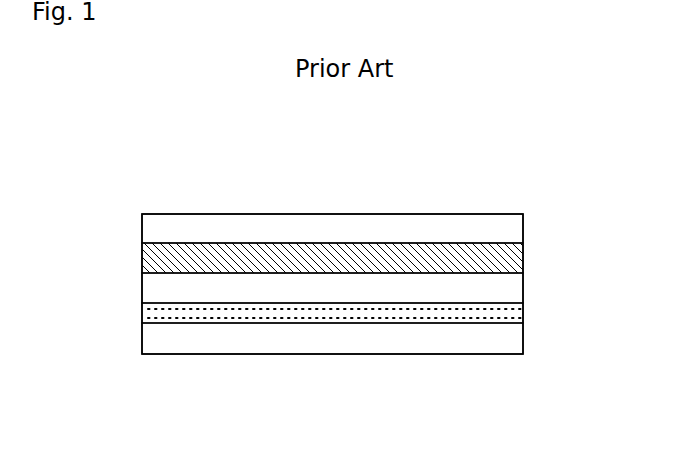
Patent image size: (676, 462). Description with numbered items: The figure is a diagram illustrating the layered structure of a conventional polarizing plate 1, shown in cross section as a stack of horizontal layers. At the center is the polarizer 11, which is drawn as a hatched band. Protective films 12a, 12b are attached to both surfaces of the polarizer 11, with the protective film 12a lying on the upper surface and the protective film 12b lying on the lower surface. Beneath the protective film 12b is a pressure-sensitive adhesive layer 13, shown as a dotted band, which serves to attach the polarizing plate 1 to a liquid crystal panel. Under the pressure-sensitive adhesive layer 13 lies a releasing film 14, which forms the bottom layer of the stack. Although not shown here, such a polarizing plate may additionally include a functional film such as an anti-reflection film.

The polarizing plate 1 is at (213, 202).
The polarizer 11 is at (508, 255).
The protective film 12a is at (512, 229).
The protective film 12b is at (155, 285).
The pressure-sensitive adhesive layer 13 is at (503, 308).
The releasing film 14 is at (465, 339).